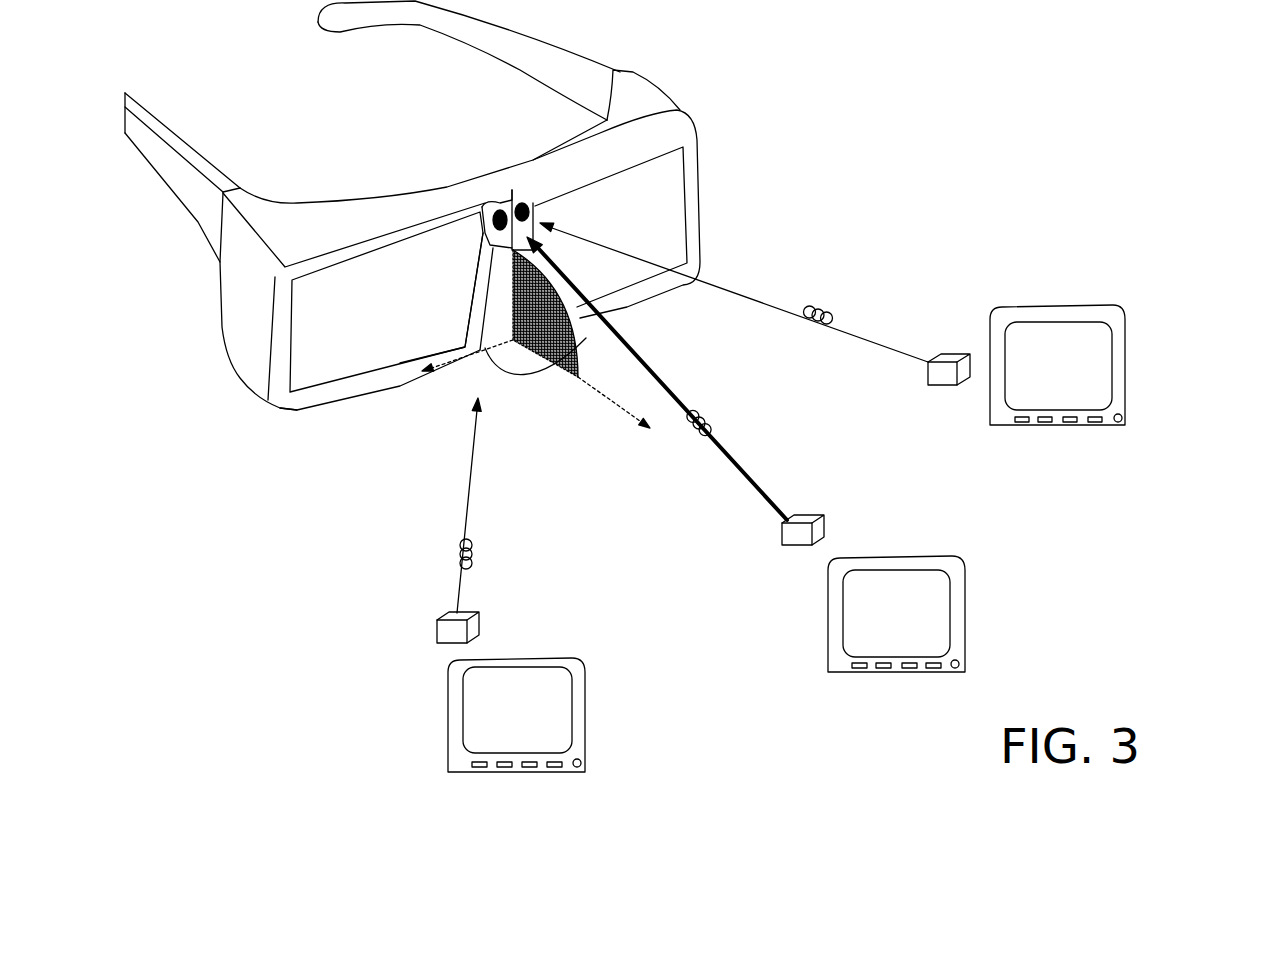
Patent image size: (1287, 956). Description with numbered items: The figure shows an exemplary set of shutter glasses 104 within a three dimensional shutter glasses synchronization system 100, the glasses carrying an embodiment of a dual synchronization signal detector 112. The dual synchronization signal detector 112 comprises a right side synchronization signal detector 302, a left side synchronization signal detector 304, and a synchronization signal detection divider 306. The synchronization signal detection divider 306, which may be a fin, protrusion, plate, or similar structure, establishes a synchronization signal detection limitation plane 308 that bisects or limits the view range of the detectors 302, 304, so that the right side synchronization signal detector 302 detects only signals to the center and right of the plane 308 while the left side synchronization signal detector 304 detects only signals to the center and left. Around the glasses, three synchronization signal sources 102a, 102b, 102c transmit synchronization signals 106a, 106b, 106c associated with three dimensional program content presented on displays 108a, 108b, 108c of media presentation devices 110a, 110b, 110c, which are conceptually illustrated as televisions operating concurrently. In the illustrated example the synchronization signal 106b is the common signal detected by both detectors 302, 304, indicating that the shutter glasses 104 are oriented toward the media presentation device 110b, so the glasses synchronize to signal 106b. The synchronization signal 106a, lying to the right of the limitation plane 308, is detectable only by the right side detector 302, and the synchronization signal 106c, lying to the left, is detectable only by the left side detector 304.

The three dimensional shutter glasses synchronization system 100 is at (1140, 632).
The synchronization signal source 102a is at (524, 612).
The synchronization signal source 102b is at (790, 548).
The synchronization signal source 102c is at (935, 388).
The shutter glasses 104 is at (247, 393).
The synchronization signal 106a is at (452, 550).
The synchronization signal 106b is at (693, 414).
The synchronization signal 106c is at (838, 265).
The display 108a is at (517, 710).
The display 108b is at (896, 613).
The display 108c is at (1058, 366).
The media presentation device 110a is at (585, 707).
The media presentation device 110b is at (965, 594).
The media presentation device 110c is at (1125, 367).
The dual synchronization signal detector 112 is at (343, 116).
The right side synchronization signal detector 302 is at (487, 213).
The left side synchronization signal detector 304 is at (520, 207).
The synchronization signal detection divider 306 is at (507, 207).
The synchronization signal detection limitation plane 308 is at (577, 343).